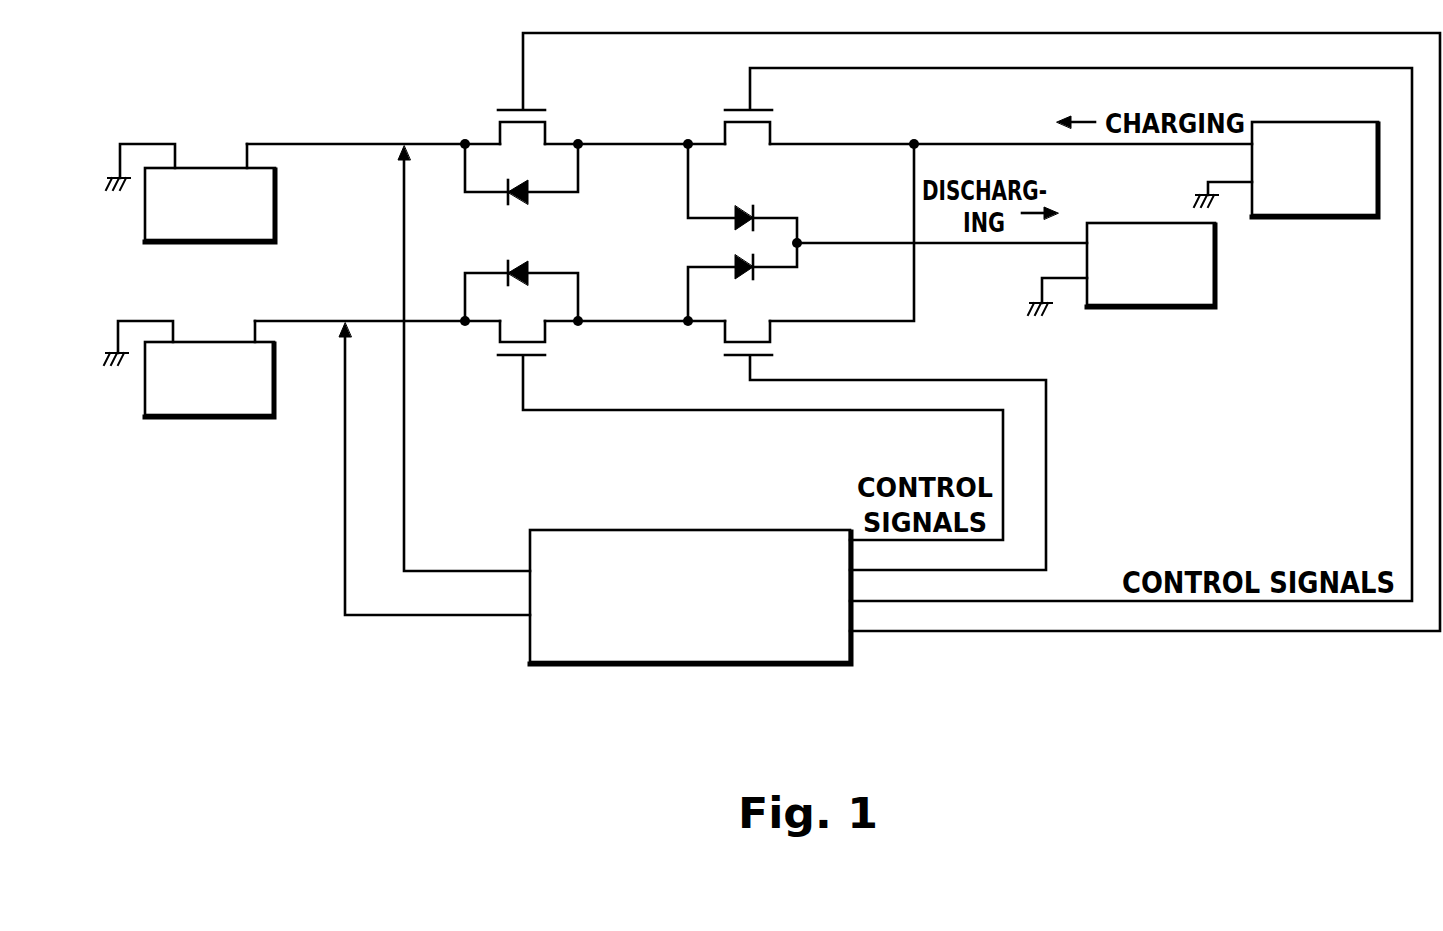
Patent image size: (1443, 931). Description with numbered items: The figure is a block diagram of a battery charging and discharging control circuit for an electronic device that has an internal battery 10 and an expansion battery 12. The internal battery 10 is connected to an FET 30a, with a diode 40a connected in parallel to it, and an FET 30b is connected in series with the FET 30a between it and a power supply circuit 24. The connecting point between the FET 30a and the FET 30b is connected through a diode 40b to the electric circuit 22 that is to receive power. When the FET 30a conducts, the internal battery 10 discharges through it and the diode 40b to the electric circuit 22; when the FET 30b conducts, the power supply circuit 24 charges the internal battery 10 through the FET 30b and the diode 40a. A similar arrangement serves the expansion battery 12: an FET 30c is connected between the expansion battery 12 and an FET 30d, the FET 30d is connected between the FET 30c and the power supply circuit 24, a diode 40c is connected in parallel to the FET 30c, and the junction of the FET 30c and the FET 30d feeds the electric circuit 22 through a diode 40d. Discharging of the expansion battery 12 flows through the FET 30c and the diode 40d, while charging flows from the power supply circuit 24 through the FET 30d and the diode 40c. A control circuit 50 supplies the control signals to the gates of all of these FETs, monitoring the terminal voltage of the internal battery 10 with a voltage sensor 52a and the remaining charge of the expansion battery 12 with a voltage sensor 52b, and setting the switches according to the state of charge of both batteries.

The internal battery 10 is at (276, 205).
The expansion battery 12 is at (208, 416).
The electric circuit 22 is at (1137, 223).
The power supply circuit 24 is at (1310, 122).
The FET 30a is at (497, 110).
The FET 30b is at (720, 125).
The FET 30c is at (497, 348).
The FET 30d is at (720, 348).
The diode 40a is at (535, 196).
The diode 40b is at (745, 210).
The diode 40c is at (520, 265).
The diode 40d is at (745, 276).
The control circuit 50 is at (853, 651).
The voltage sensor 52a is at (405, 155).
The voltage sensor 52b is at (345, 355).